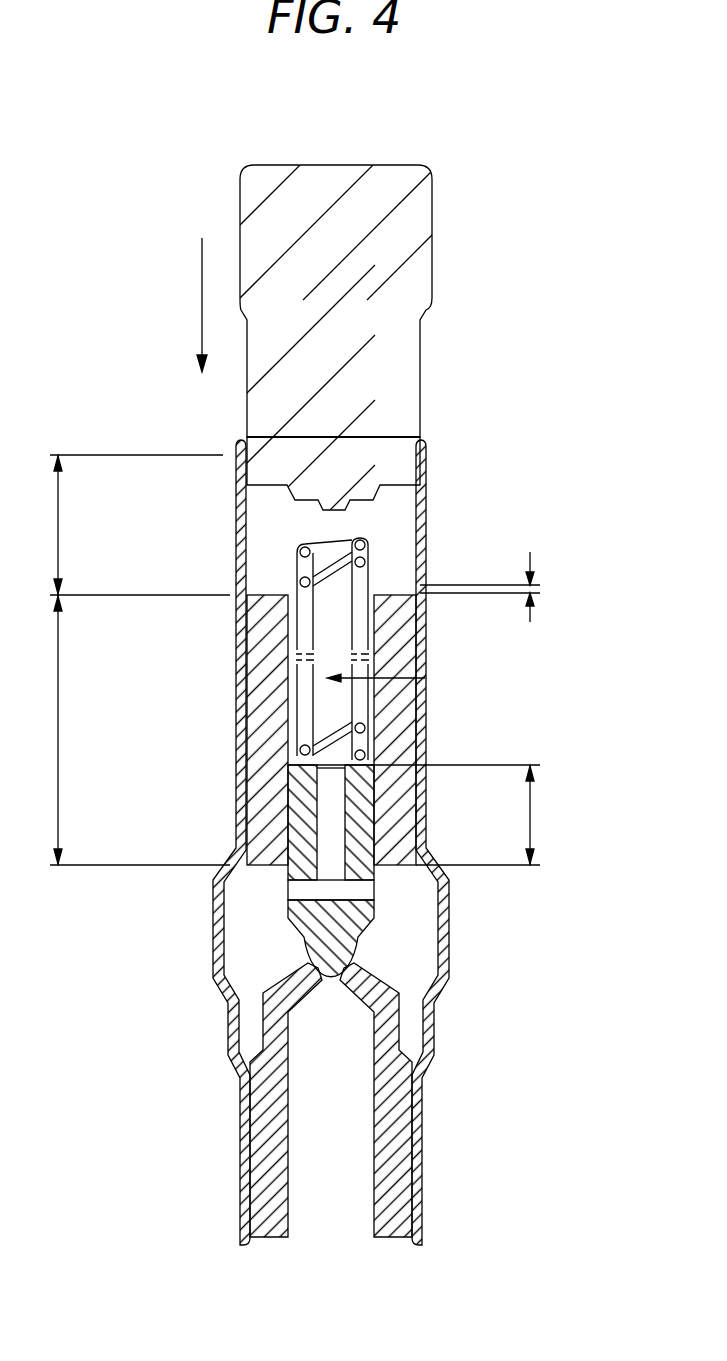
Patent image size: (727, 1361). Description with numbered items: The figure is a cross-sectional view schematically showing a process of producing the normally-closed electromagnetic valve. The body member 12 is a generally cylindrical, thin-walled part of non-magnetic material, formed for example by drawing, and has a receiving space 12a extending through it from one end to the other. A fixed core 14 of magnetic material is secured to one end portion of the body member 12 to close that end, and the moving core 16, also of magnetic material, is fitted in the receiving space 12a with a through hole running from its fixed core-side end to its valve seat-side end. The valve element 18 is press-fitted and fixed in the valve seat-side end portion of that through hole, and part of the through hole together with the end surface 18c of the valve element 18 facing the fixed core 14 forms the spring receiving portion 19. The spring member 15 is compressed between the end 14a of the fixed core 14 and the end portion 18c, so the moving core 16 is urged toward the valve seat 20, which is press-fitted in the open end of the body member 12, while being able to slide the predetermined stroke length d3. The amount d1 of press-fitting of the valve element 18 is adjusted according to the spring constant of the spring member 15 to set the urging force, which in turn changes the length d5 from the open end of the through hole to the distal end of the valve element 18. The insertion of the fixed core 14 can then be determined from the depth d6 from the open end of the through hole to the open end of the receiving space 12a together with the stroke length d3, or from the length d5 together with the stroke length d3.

The body member 12 is at (443, 915).
The receiving space 12a is at (342, 437).
The fixed core 14 is at (386, 248).
The end of fixed core 14a is at (335, 497).
The spring member 15 is at (370, 546).
The moving core 16 is at (413, 700).
The valve element 18 is at (338, 940).
The end surface of valve element 18c is at (331, 752).
The spring receiving portion 19 is at (425, 678).
The valve seat 20 is at (378, 1192).
The amount of press-fitting of valve element d1 is at (470, 815).
The stroke length of moving core d3 is at (499, 587).
The length from open end of through hole to distal end of valve element d5 is at (128, 730).
The depth from open end of through hole to open end of receiving space d6 is at (128, 525).